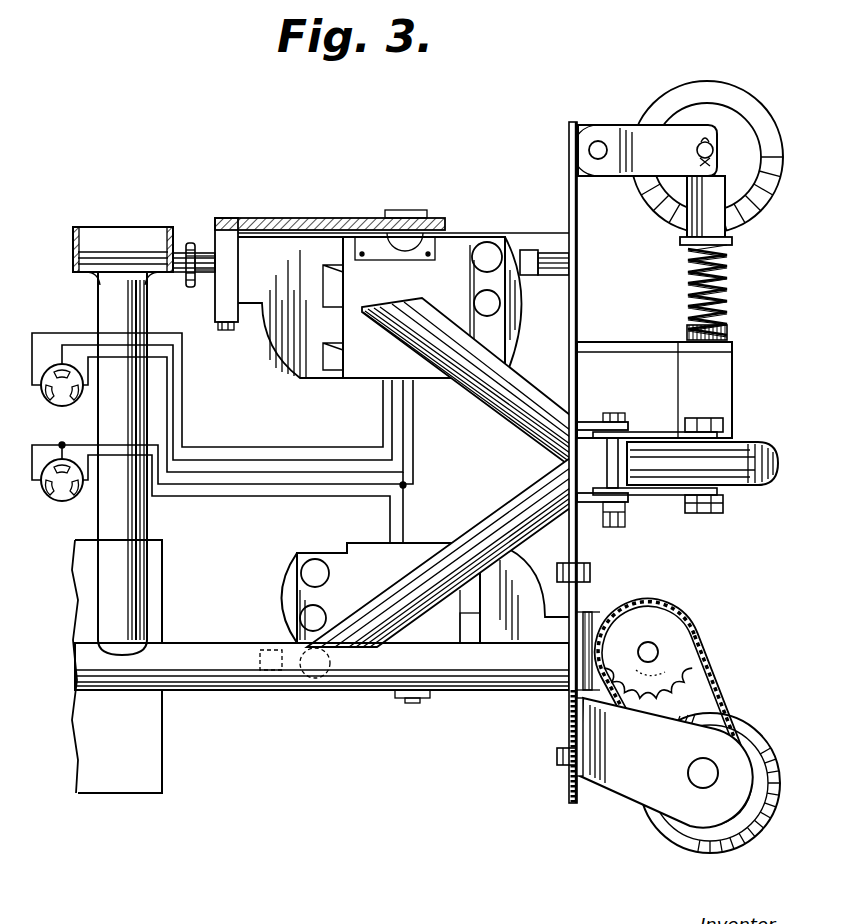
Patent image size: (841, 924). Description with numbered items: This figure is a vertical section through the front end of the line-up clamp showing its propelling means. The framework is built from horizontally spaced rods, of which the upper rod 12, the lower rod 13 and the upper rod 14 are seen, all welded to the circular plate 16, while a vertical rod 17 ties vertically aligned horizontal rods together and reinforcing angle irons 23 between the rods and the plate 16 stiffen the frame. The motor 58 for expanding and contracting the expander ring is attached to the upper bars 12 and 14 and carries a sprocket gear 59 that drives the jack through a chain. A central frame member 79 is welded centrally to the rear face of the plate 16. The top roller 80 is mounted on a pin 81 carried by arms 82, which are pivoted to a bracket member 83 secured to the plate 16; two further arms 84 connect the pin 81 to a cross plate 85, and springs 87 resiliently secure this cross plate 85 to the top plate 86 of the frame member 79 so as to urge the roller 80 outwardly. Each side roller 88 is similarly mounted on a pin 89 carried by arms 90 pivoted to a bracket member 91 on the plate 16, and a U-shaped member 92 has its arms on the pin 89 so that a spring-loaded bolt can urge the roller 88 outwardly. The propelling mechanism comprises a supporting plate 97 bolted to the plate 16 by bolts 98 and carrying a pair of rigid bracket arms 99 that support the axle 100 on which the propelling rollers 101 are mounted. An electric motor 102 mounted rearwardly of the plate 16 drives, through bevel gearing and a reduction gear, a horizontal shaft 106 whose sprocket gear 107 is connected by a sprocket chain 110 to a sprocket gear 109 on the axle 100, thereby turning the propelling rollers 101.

The horizontal rod 12 is at (130, 235).
The horizontal rod 13 is at (244, 672).
The horizontal rod 14 is at (524, 235).
The circular plate 16 is at (569, 126).
The vertical rod 17 is at (132, 515).
The reinforcing angle iron 23 is at (512, 490).
The motor 58 is at (276, 328).
The sprocket gear 59 is at (188, 284).
The central frame member 79 is at (715, 382).
The top roller 80 is at (705, 84).
The pin 81 is at (713, 150).
The arms 82 is at (637, 160).
The bracket member 83 is at (590, 133).
The arms 84 is at (702, 213).
The cross plate 85 is at (733, 242).
The top plate 86 is at (732, 343).
The springs 87 is at (727, 300).
The side roller 88 is at (750, 487).
The pin 89 is at (705, 507).
The arms 90 is at (648, 432).
The bracket member 91 is at (594, 422).
The U-shaped member 92 is at (724, 425).
The supporting plate 97 is at (578, 780).
The bolts 98 is at (590, 568).
The bracket arms 99 is at (640, 770).
The axle 100 is at (700, 773).
The propelling rollers 101 is at (705, 835).
The electric motor 102 is at (285, 601).
The horizontal shaft 106 is at (648, 643).
The sprocket gear 107 is at (700, 662).
The sprocket gear 109 is at (720, 728).
The sprocket chain 110 is at (704, 684).